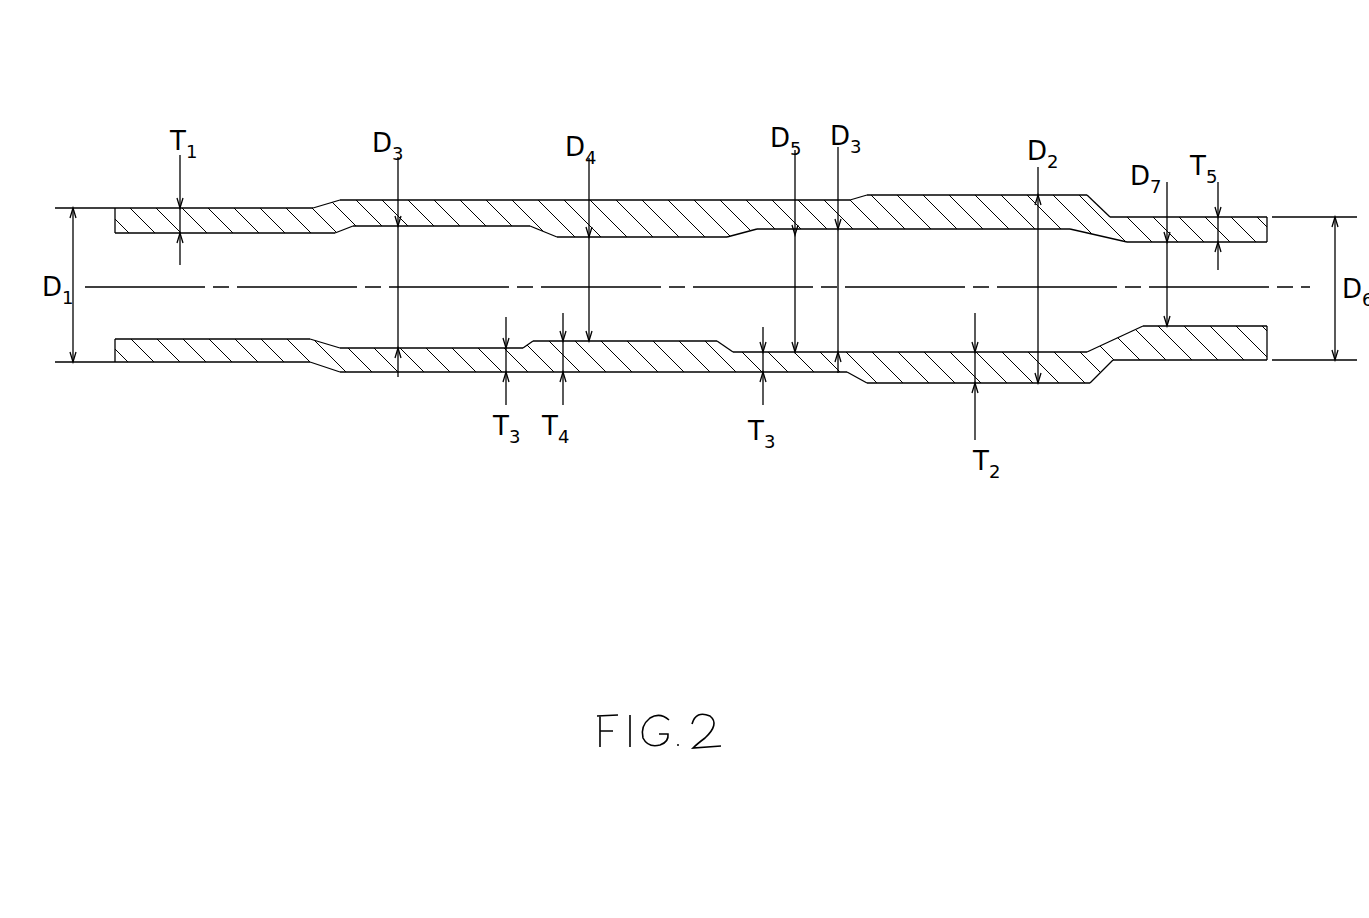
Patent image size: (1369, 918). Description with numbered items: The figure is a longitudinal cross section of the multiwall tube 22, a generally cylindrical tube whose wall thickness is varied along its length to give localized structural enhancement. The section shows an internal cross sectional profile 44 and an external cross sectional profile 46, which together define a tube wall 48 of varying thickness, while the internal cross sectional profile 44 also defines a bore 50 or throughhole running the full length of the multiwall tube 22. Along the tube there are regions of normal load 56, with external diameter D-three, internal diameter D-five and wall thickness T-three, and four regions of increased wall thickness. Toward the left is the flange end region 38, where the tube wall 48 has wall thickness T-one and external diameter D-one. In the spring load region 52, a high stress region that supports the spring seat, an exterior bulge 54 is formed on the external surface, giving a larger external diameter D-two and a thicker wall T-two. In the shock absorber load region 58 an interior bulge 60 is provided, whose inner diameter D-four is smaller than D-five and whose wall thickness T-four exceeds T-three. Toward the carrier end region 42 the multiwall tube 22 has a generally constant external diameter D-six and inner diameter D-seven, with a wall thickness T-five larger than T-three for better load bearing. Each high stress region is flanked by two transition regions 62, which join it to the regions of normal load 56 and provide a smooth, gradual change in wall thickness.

The multiwall tube 22 is at (1097, 97).
The flange end region 38 is at (145, 222).
The carrier end region 42 is at (1237, 222).
The internal cross sectional profile 44 is at (303, 353).
The external cross sectional profile 46 is at (452, 382).
The tube wall 48 is at (217, 350).
The bore 50 is at (156, 320).
The spring load region 52 is at (965, 205).
The exterior bulge 54 is at (920, 385).
The regions of normal load 56 is at (362, 205).
The shock absorber load region 58 is at (682, 220).
The interior bulge 60 is at (655, 343).
The transition regions 62 is at (533, 370).